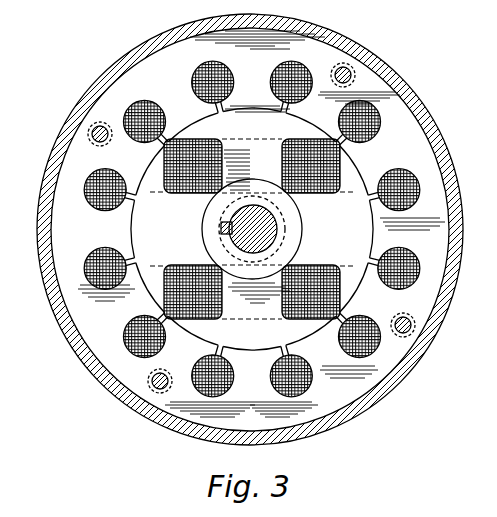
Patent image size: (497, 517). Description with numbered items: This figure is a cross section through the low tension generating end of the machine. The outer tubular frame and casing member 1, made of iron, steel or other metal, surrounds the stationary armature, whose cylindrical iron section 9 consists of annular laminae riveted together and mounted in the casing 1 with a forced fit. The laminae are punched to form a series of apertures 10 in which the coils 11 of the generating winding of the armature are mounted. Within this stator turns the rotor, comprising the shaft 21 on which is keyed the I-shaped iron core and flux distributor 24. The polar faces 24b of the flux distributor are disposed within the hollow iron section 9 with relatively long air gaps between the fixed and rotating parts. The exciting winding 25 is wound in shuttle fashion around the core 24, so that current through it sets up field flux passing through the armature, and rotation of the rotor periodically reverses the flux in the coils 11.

The tubular frame and casing member 1 is at (40, 219).
The cylindrical iron section 9 is at (129, 241).
The apertures 10 is at (379, 132).
The armature coils 11 is at (98, 197).
The shaft 21 is at (228, 234).
The iron core and flux distributor 24 is at (296, 240).
The polar faces of the flux distributor 24b is at (260, 108).
The exciting winding 25 is at (191, 193).